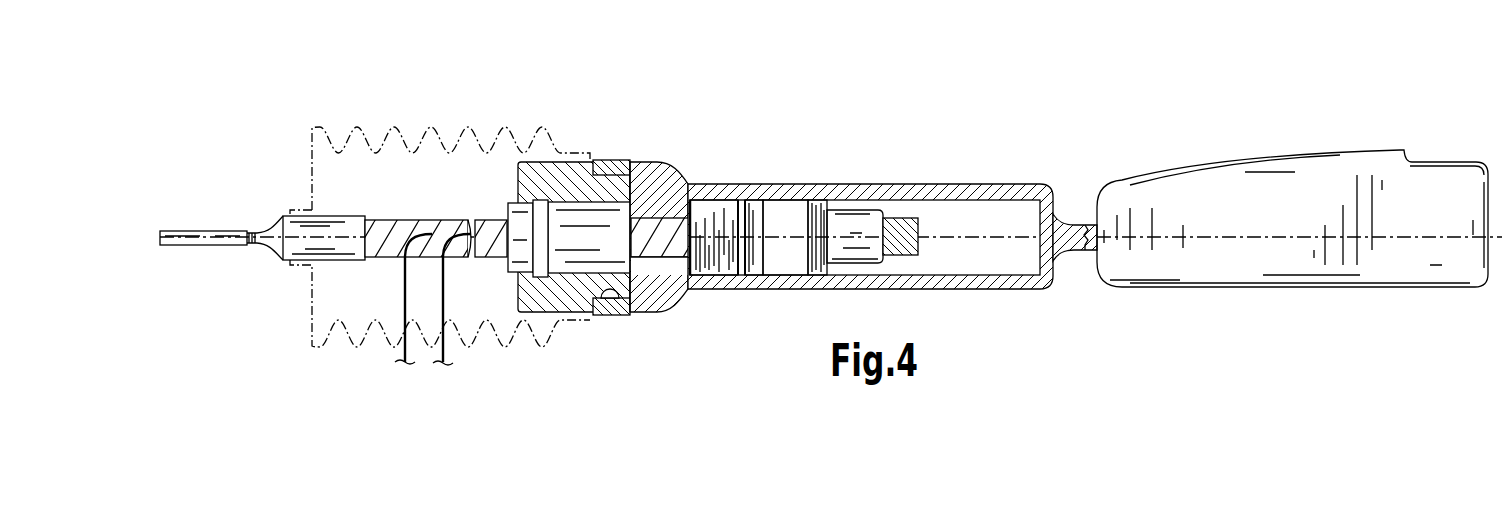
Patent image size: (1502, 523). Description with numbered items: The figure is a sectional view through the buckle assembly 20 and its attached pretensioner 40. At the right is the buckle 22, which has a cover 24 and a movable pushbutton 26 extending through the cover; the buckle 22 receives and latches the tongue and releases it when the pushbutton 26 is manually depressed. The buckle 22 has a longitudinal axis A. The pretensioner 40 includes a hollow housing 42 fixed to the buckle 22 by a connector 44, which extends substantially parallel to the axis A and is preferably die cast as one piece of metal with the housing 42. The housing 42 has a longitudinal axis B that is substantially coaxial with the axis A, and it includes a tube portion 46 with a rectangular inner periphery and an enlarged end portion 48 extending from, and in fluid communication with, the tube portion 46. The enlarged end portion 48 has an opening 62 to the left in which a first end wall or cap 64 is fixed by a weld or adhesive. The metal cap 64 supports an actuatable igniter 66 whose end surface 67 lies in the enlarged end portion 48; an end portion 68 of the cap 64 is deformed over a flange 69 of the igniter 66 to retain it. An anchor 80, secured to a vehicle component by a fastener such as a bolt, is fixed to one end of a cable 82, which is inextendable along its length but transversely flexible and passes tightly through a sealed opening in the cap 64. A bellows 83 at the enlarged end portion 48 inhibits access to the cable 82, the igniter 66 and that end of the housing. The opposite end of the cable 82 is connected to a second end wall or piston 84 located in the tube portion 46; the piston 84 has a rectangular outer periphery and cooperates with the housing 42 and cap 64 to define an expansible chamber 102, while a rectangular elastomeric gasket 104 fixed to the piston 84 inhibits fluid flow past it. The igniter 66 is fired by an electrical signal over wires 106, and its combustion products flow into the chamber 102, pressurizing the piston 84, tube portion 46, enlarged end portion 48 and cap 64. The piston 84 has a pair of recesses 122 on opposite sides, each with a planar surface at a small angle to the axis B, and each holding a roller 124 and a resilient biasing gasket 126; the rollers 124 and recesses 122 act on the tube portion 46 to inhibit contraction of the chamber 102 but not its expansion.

The buckle assembly 20 is at (1097, 117).
The buckle 22 is at (1173, 163).
The cover 24 is at (1315, 152).
The pushbutton 26 is at (1436, 162).
The pretensioner 40 is at (975, 160).
The housing 42 is at (692, 298).
The connector 44 is at (1073, 224).
The tube portion 46 is at (895, 282).
The enlarged end portion 48 is at (648, 302).
The opening 62 is at (647, 302).
The cap 64 is at (567, 320).
The igniter 66 is at (523, 257).
The end surface 67 is at (643, 203).
The end portion 68 is at (523, 175).
The flange 69 is at (540, 265).
The anchor 80 is at (203, 237).
The cable 82 is at (443, 222).
The bellows 83 is at (328, 128).
The piston 84 is at (814, 277).
The expansible chamber 102 is at (660, 267).
The gasket 104 is at (681, 200).
The wires 106 is at (442, 295).
The recesses 122 is at (792, 217).
The roller 124 is at (755, 222).
The biasing gasket 126 is at (751, 220).
The longitudinal axis A is at (1415, 233).
The longitudinal axis B is at (965, 237).